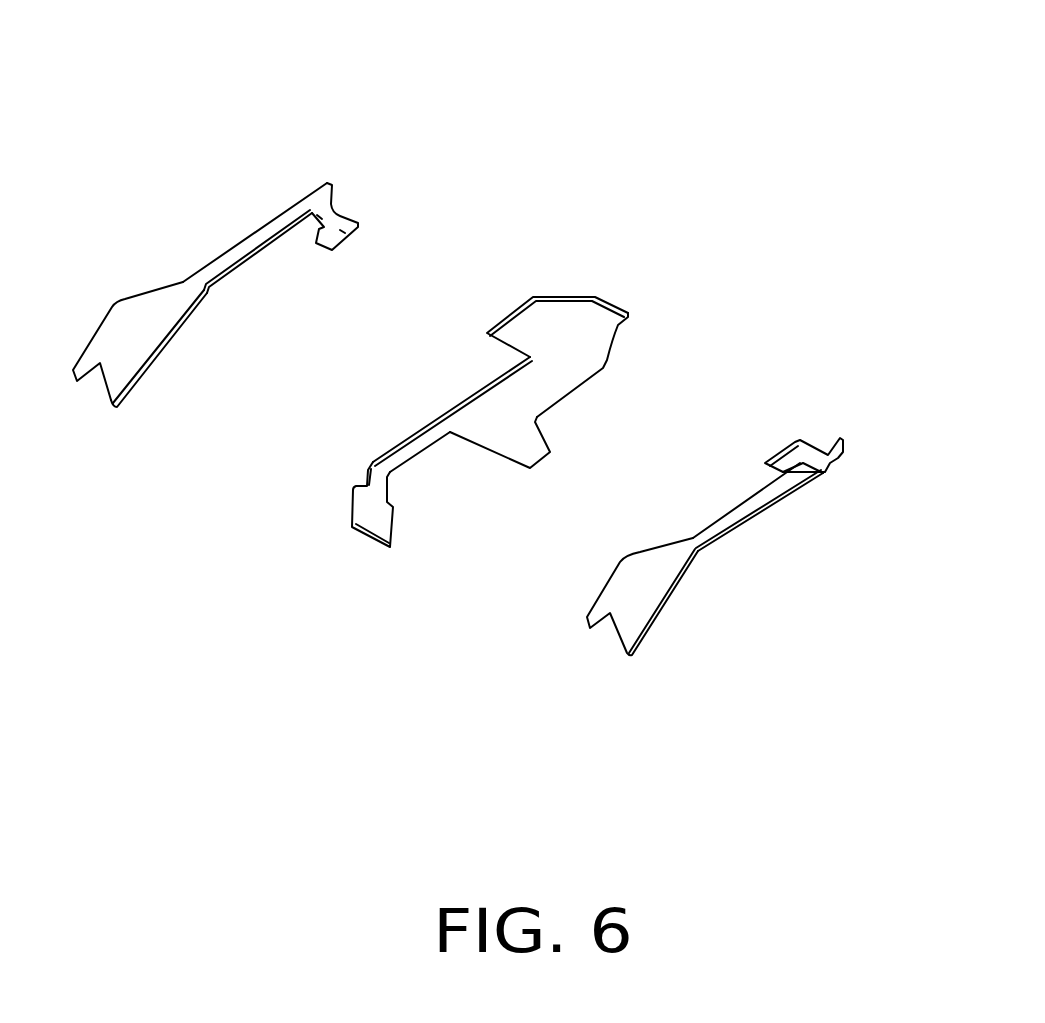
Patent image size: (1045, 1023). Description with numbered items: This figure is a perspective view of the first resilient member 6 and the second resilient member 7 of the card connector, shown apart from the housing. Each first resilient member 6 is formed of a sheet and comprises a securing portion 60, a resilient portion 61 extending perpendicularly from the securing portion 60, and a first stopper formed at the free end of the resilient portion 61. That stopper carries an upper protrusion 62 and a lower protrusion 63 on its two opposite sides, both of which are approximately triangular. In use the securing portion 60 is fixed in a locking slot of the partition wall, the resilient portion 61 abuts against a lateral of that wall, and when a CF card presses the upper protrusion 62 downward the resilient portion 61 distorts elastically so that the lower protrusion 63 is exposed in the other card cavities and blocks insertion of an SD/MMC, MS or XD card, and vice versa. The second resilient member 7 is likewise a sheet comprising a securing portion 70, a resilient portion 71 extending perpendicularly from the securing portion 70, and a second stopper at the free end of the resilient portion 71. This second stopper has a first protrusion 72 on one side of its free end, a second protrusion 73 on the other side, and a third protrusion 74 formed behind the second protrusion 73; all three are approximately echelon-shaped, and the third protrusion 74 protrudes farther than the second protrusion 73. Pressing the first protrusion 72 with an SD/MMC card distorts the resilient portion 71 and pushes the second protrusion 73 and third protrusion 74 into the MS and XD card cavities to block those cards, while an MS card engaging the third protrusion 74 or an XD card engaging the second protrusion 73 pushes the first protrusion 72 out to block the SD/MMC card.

The first resilient member 6 is at (299, 148).
The securing portion 60 is at (353, 223).
The resilient portion 61 is at (250, 245).
The upper protrusion 62 is at (112, 325).
The lower protrusion 63 is at (113, 377).
The second resilient member 7 is at (610, 232).
The securing portion 70 is at (373, 517).
The resilient portion 71 is at (405, 453).
The first protrusion 72 is at (536, 327).
The second protrusion 73 is at (593, 350).
The third protrusion 74 is at (528, 453).